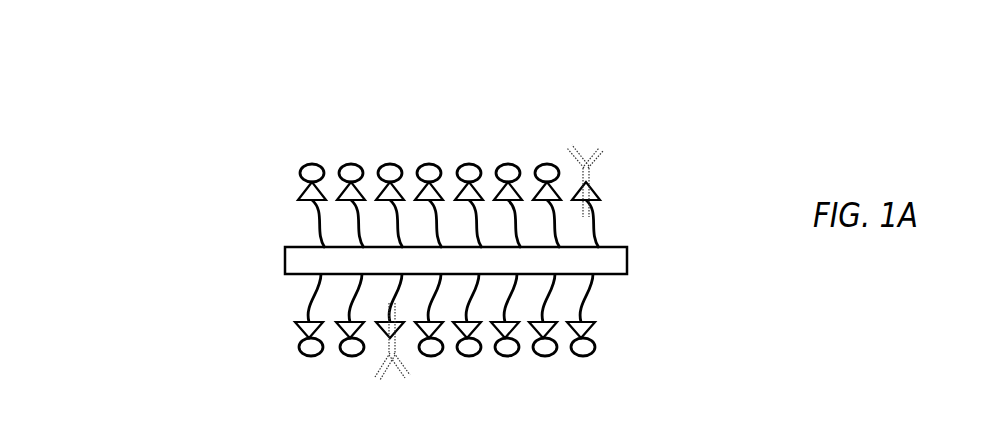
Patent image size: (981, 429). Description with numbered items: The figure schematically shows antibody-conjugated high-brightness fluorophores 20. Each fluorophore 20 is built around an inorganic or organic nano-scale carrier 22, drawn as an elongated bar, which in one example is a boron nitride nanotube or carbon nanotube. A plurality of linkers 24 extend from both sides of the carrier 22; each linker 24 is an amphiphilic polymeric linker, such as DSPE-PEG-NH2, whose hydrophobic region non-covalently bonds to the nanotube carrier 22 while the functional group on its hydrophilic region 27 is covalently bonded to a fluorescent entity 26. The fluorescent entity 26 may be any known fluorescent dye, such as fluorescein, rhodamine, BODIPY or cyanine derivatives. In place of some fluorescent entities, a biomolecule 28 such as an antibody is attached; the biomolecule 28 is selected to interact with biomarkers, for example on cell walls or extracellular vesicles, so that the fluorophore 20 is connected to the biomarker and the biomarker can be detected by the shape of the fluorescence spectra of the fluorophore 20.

The fluorophore 20 is at (158, 99).
The nano-scale carrier 22 is at (285, 258).
The linker 24 is at (320, 230).
The fluorescent entity 26 is at (312, 163).
The hydrophilic region 27 is at (300, 196).
The biomolecule 28 is at (580, 150).